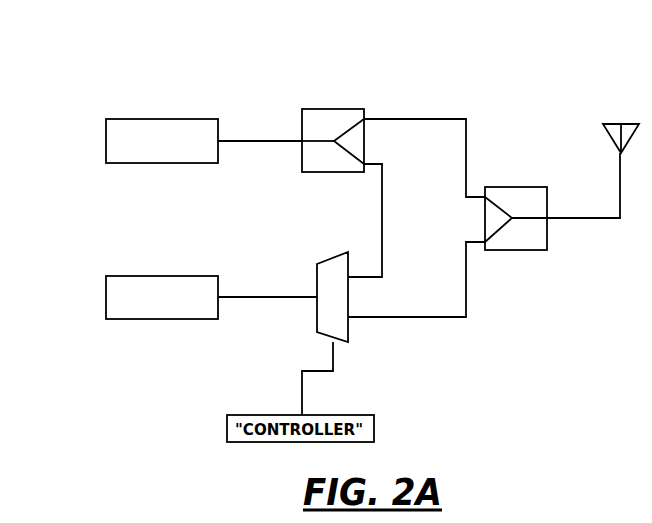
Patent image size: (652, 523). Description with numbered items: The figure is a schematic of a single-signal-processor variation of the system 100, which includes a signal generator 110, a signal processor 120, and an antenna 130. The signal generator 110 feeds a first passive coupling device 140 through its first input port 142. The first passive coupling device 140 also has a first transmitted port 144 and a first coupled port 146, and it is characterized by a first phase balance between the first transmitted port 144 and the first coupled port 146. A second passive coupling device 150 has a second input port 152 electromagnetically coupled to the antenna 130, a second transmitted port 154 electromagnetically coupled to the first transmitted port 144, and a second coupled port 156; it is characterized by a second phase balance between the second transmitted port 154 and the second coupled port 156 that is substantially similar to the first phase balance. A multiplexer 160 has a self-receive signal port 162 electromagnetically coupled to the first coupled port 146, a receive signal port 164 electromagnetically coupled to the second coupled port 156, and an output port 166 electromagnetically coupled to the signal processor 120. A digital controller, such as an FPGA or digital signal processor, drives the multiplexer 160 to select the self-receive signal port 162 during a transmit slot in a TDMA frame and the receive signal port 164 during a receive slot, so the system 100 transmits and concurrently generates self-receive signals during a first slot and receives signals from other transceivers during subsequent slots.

The system 100 is at (103, 50).
The signal generator 110 is at (118, 163).
The signal processor 120 is at (119, 276).
The antenna 130 is at (621, 124).
The first passive coupling device 140 is at (364, 159).
The first input port 142 is at (302, 140).
The first transmitted port 144 is at (364, 120).
The first coupled port 146 is at (364, 165).
The second passive coupling device 150 is at (484, 218).
The second input port 152 is at (547, 220).
The second transmitted port 154 is at (485, 197).
The second coupled port 156 is at (485, 242).
The multiplexer 160 is at (341, 273).
The self-receive signal port 162 is at (348, 278).
The receive signal port 164 is at (348, 319).
The output port 166 is at (317, 298).